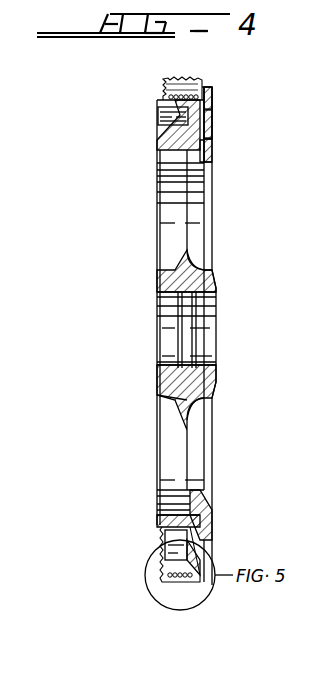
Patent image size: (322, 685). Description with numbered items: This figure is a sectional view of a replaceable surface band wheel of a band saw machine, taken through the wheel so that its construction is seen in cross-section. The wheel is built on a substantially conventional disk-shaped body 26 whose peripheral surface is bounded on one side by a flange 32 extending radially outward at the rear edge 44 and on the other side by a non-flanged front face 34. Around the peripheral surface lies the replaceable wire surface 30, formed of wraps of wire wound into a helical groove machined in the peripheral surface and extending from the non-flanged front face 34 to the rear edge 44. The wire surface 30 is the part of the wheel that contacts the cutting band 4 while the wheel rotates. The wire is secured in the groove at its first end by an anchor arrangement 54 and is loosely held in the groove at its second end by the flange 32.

The wire surface 30 is at (183, 90).
The non-flanged front face 34 is at (162, 97).
The flange 32 is at (211, 100).
The anchor arrangement 54 is at (157, 118).
The rear edge 44 is at (211, 121).
The disk-shaped body 26 is at (210, 158).
The cutting band 4 is at (168, 582).